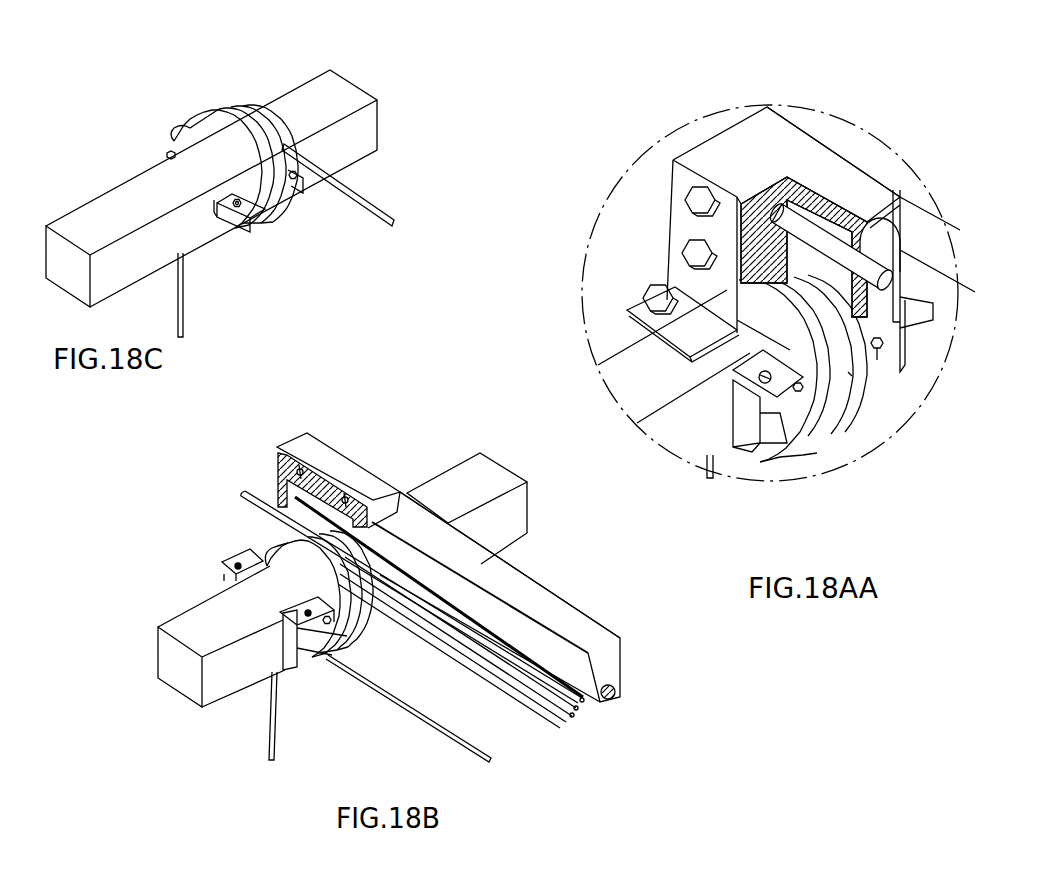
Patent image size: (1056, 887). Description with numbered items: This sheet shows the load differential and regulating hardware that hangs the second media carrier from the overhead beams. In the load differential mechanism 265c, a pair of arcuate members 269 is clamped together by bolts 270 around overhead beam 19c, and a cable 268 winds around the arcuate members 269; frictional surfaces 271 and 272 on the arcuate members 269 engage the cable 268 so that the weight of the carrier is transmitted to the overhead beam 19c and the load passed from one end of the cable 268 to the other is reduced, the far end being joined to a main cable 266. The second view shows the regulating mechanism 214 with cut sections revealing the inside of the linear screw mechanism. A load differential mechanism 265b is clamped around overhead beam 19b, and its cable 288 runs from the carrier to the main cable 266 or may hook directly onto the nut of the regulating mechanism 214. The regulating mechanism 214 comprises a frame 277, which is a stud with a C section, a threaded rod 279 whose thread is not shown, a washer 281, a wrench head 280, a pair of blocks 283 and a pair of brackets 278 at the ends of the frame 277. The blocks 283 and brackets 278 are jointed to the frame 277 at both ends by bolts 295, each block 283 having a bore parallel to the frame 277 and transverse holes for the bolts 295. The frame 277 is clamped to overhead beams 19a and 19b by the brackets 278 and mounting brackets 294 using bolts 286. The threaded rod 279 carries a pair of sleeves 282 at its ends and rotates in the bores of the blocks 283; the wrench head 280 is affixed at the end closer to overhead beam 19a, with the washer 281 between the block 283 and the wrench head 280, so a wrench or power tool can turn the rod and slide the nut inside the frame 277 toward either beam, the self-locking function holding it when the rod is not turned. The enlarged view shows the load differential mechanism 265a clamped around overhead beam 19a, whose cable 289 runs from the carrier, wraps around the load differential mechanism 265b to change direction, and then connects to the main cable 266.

In FIG. 18AA, the overhead beam 19a is at (920, 207).
In FIG. 18B, the overhead beam 19b is at (493, 475).
In FIG. 18C, the overhead beam 19c is at (338, 148).
In FIG. 18B, the regulating mechanism 214 is at (577, 573).
In FIG. 18AA, the load differential mechanism 265a is at (853, 433).
In FIG. 18B, the load differential mechanism 265b is at (376, 650).
In FIG. 18C, the load differential mechanism 265c is at (232, 170).
In FIG. 18B, the main cable 266 is at (243, 497).
In FIG. 18C, the cable 268 is at (355, 198).
In FIG. 18C, the arcuate members 269 is at (170, 147).
In FIG. 18C, the bolts 270 is at (247, 208).
In FIG. 18C, the frictional surface 271 is at (230, 137).
In FIG. 18C, the frictional surface 272 is at (282, 222).
In FIG. 18AA, the frame 277 is at (653, 180).
In FIG. 18B, the frame 277 is at (513, 577).
In FIG. 18AA, the brackets 278 is at (737, 147).
In FIG. 18B, the brackets 278 is at (308, 448).
In FIG. 18AA, the threaded rod 279 is at (943, 333).
In FIG. 18B, the threaded rod 279 is at (280, 483).
In FIG. 18AA, the wrench head 280 is at (903, 270).
In FIG. 18AA, the washer 281 is at (857, 217).
In FIG. 18AA, the sleeves 282 is at (798, 180).
In FIG. 18B, the sleeves 282 is at (267, 477).
In FIG. 18AA, the blocks 283 is at (900, 210).
In FIG. 18B, the blocks 283 is at (280, 462).
In FIG. 18AA, the bolts 286 is at (645, 296).
In FIG. 18B, the bolts 286 is at (235, 565).
In FIG. 18B, the cable 288 is at (268, 725).
In FIG. 18AA, the cable 289 is at (850, 375).
In FIG. 18B, the cable 289 is at (462, 742).
In FIG. 18AA, the mounting brackets 294 is at (747, 437).
In FIG. 18B, the mounting brackets 294 is at (298, 653).
In FIG. 18AA, the bolts 295 is at (690, 254).
In FIG. 18B, the bolts 295 is at (350, 492).